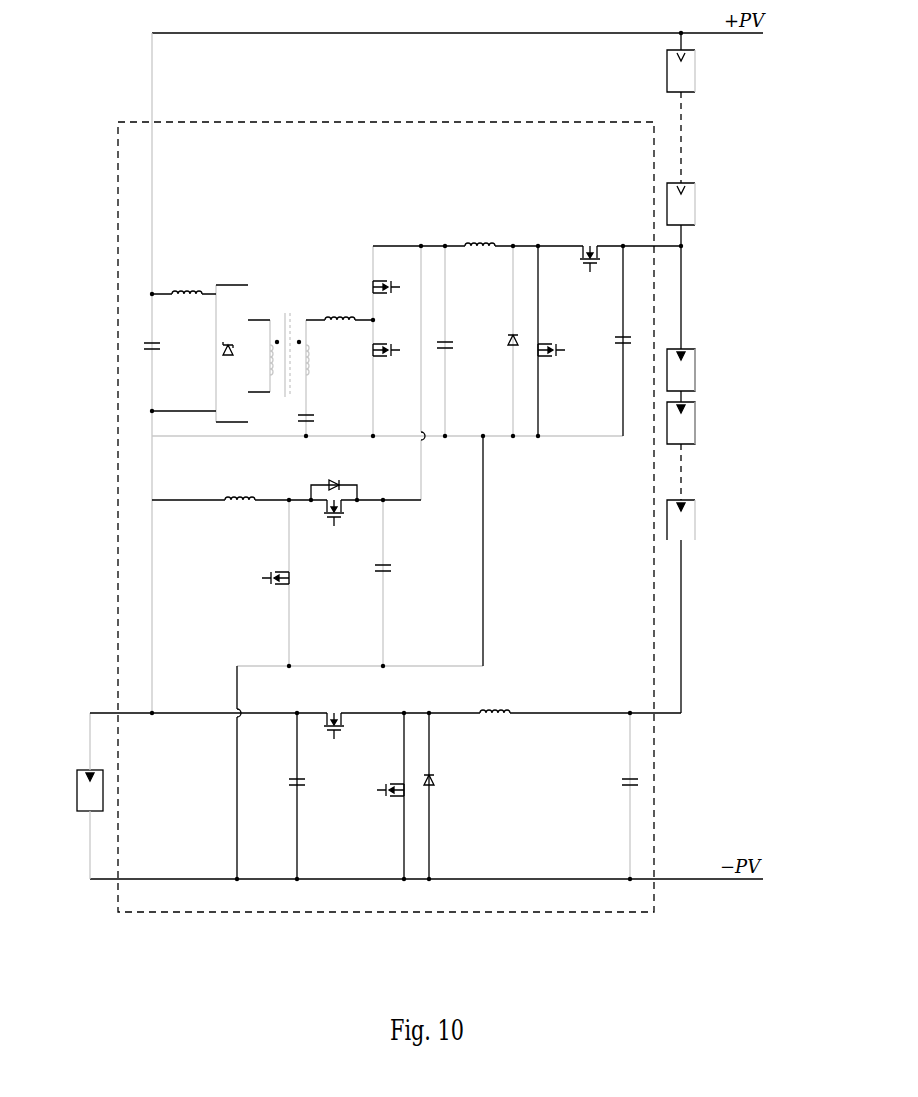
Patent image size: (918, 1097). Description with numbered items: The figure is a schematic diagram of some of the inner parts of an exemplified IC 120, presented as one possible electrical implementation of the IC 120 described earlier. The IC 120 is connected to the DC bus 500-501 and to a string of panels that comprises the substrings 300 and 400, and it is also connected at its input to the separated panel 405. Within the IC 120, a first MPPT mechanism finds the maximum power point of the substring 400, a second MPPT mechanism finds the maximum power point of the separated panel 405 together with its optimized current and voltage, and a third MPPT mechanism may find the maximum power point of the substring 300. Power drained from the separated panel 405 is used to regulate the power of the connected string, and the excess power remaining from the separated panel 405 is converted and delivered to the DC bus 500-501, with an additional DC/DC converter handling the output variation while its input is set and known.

The IC 120 is at (120, 181).
The DC bus 500 is at (441, 35).
The DC bus 501 is at (193, 879).
The substring 400 is at (699, 42).
The substring 300 is at (704, 343).
The separated panel 405 is at (90, 798).